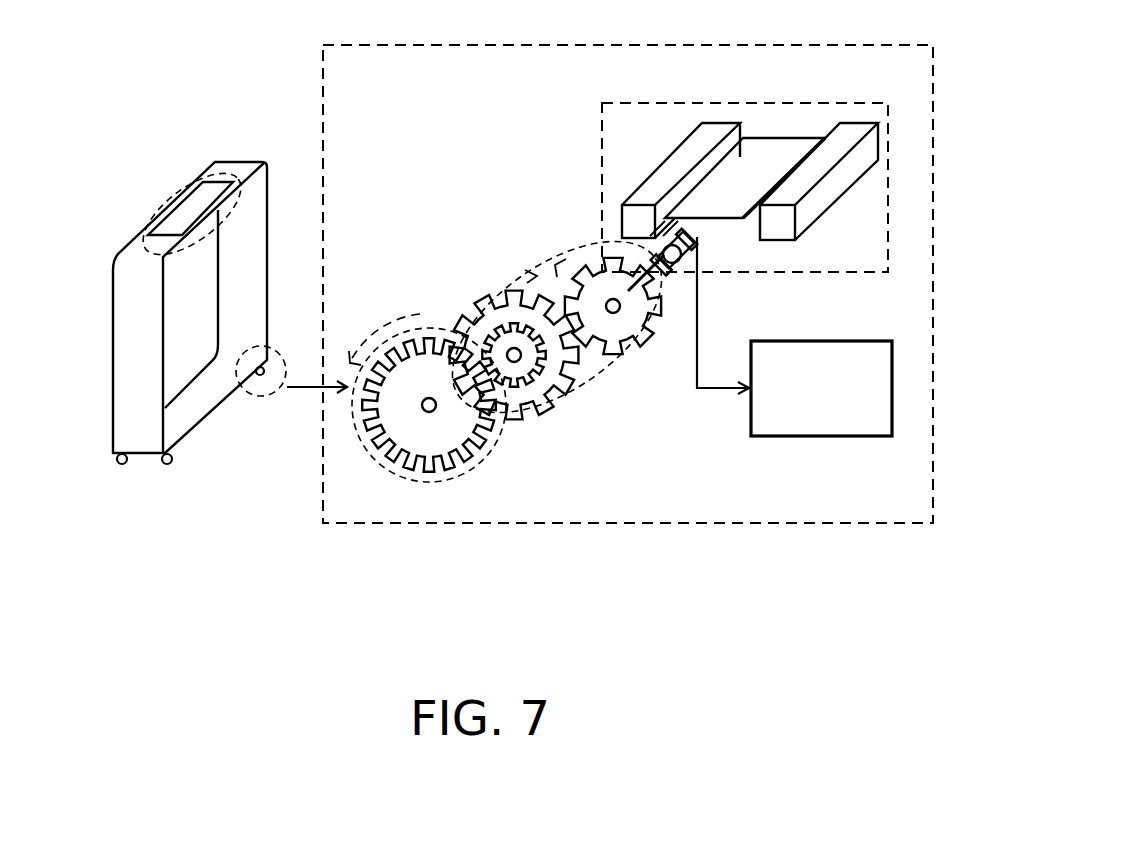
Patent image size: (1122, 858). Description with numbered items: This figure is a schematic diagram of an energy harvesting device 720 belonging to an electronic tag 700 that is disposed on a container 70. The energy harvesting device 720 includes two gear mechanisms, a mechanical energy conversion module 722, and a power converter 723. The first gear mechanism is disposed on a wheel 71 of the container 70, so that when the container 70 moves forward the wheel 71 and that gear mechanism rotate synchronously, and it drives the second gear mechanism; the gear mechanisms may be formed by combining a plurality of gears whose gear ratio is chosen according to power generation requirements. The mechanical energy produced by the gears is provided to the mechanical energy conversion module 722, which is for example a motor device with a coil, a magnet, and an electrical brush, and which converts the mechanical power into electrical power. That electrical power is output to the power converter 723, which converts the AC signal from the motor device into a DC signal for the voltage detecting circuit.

The container 70 is at (130, 355).
The electronic tag 700 is at (178, 187).
The wheel 71 is at (258, 375).
The energy harvesting device 720 is at (778, 45).
The mechanical energy conversion module 722 is at (778, 103).
The power converter 723 is at (852, 340).